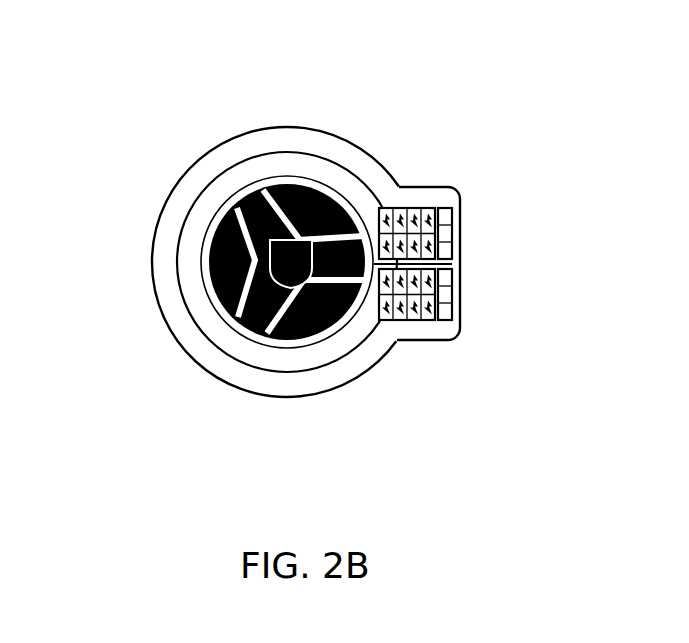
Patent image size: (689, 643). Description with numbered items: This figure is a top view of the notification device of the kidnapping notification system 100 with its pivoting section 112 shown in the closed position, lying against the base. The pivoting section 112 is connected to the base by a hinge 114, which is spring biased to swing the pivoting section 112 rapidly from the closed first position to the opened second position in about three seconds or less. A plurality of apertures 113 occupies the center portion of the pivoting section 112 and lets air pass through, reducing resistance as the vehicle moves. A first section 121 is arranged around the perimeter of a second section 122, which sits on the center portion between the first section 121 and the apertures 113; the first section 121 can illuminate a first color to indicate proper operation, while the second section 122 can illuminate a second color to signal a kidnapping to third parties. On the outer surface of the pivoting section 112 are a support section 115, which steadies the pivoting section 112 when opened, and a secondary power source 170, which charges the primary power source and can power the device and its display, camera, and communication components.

The kidnapping notification system 100 is at (164, 70).
The pivoting section 112 is at (242, 357).
The plurality of apertures 113 is at (214, 250).
The hinge 114 is at (448, 228).
The support section 115 is at (448, 270).
The first section 121 is at (160, 307).
The second section 122 is at (282, 152).
The secondary power source 170 is at (412, 208).